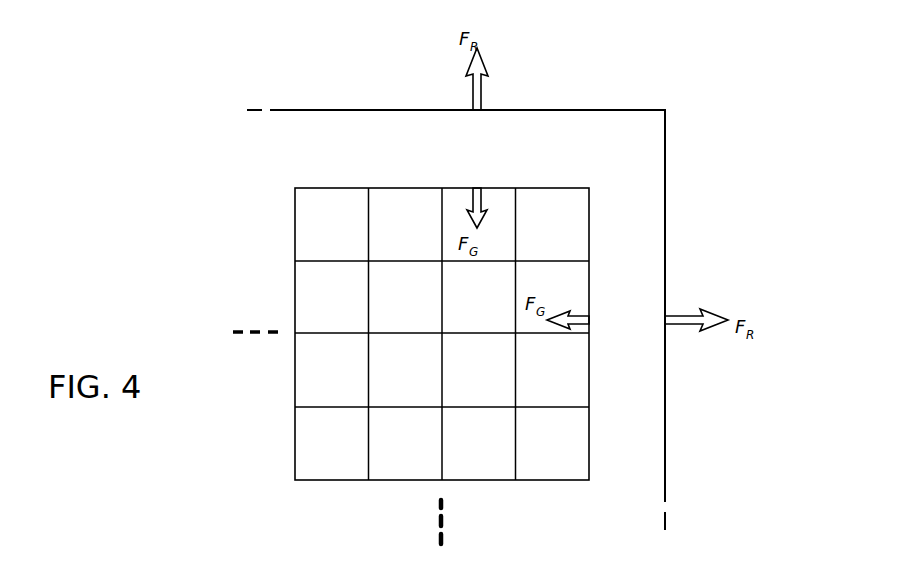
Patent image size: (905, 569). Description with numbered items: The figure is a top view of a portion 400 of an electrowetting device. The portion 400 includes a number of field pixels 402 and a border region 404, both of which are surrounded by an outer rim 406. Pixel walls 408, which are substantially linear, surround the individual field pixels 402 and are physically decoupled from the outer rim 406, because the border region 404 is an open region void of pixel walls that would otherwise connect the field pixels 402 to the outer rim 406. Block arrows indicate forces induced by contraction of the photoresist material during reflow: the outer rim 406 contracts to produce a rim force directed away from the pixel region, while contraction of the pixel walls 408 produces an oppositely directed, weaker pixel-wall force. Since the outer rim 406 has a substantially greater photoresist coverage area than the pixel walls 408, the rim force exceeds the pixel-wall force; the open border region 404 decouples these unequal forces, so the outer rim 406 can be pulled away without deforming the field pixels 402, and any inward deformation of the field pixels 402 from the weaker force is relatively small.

The portion of an electrowetting device 400 is at (719, 108).
The field pixels 402 is at (420, 309).
The border region 404 is at (650, 171).
The outer rim 406 is at (577, 98).
The pixel walls 408 is at (328, 408).